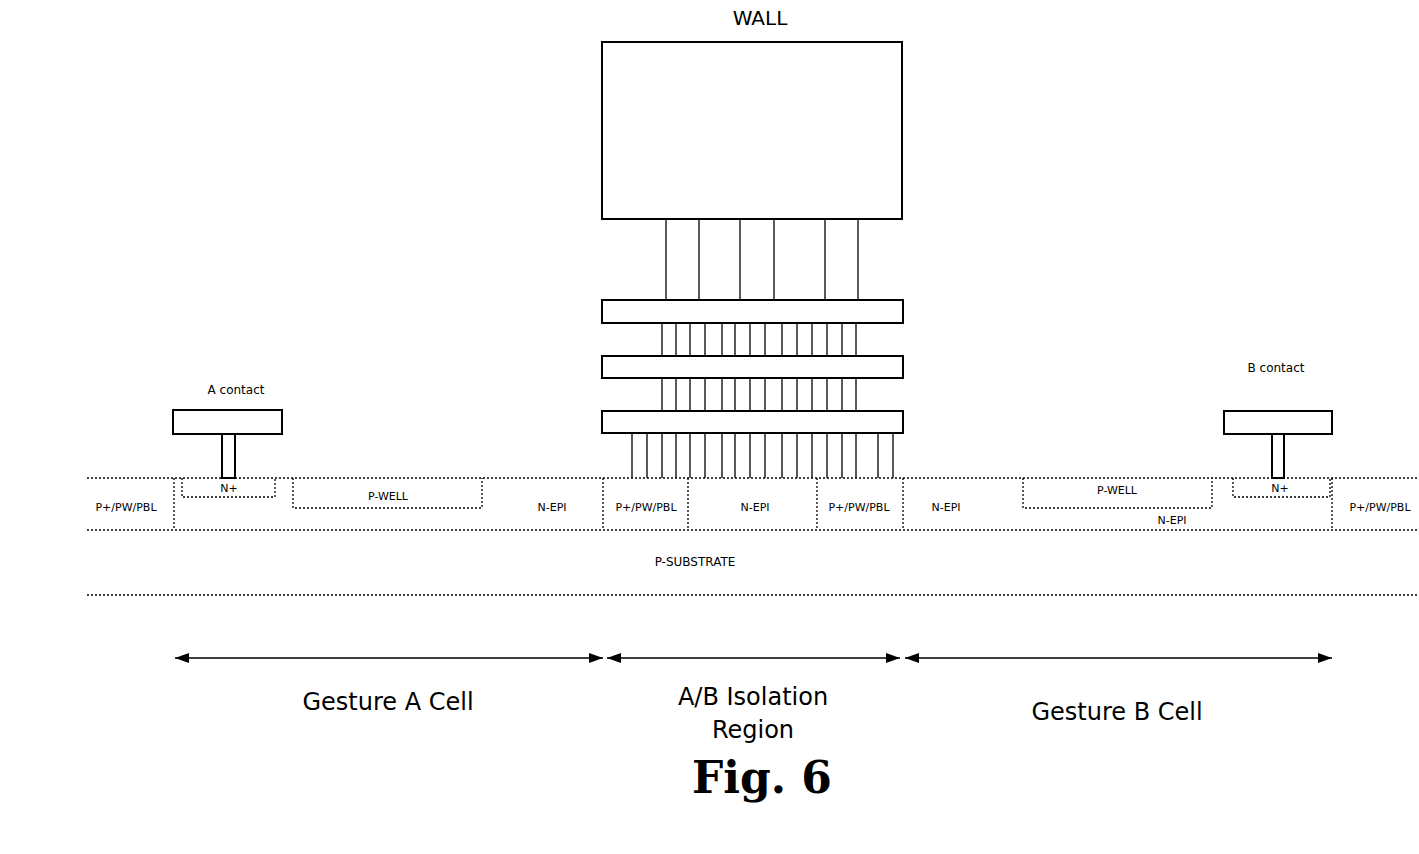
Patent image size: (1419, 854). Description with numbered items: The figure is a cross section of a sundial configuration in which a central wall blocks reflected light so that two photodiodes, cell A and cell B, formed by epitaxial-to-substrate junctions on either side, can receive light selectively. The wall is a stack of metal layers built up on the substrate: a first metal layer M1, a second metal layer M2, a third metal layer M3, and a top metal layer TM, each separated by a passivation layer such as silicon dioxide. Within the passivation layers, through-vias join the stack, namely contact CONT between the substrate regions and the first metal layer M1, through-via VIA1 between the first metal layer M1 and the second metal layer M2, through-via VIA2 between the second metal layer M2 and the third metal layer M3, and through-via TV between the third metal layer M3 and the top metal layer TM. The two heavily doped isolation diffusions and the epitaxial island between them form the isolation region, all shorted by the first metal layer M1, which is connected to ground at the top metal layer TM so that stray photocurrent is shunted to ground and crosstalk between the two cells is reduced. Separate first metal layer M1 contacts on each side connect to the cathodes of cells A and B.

The top metal layer TM is at (752, 130).
The through-via TV is at (762, 259).
The third metal layer M3 is at (752, 311).
The through-via VIA2 is at (730, 339).
The second metal layer M2 is at (752, 367).
The through-via VIA1 is at (730, 394).
The first metal layer M1 is at (752, 444).
The contact CONT is at (738, 455).